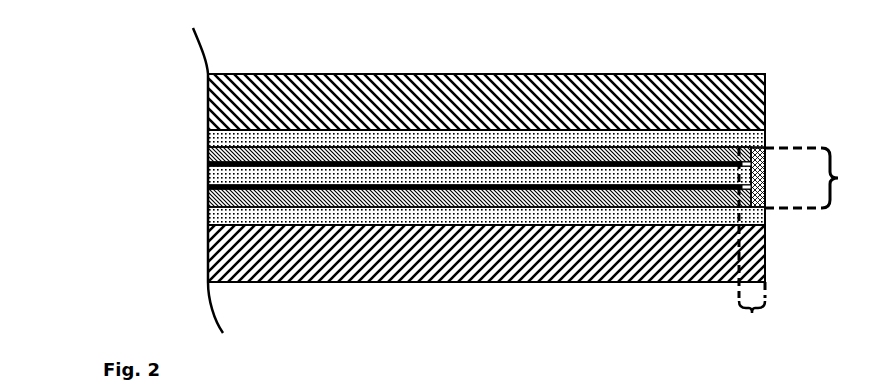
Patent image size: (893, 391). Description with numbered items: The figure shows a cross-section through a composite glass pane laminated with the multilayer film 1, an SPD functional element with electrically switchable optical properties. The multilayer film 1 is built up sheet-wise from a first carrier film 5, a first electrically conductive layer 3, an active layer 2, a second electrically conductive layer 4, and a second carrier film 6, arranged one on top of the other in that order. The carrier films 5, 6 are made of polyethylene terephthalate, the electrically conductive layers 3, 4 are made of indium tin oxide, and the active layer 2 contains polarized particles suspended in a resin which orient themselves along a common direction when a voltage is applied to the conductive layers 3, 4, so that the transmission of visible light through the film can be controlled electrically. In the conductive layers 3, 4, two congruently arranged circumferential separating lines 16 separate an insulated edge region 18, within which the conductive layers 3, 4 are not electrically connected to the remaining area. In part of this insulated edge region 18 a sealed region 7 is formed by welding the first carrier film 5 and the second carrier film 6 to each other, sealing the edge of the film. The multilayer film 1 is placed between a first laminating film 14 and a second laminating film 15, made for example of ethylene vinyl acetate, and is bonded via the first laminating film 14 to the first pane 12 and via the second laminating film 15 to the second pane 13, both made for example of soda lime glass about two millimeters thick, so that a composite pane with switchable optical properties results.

The multilayer film 1 is at (812, 178).
The active layer 2 is at (216, 176).
The first electrically conductive layer 3 is at (216, 163).
The second electrically conductive layer 4 is at (216, 189).
The first carrier film 5 is at (218, 147).
The second carrier film 6 is at (218, 206).
The sealed region 7 is at (765, 207).
The first pane 12 is at (287, 85).
The second pane 13 is at (288, 263).
The first laminating film 14 is at (219, 139).
The second laminating film 15 is at (218, 222).
The separating lines 16 is at (747, 188).
The insulated edge region 18 is at (753, 246).